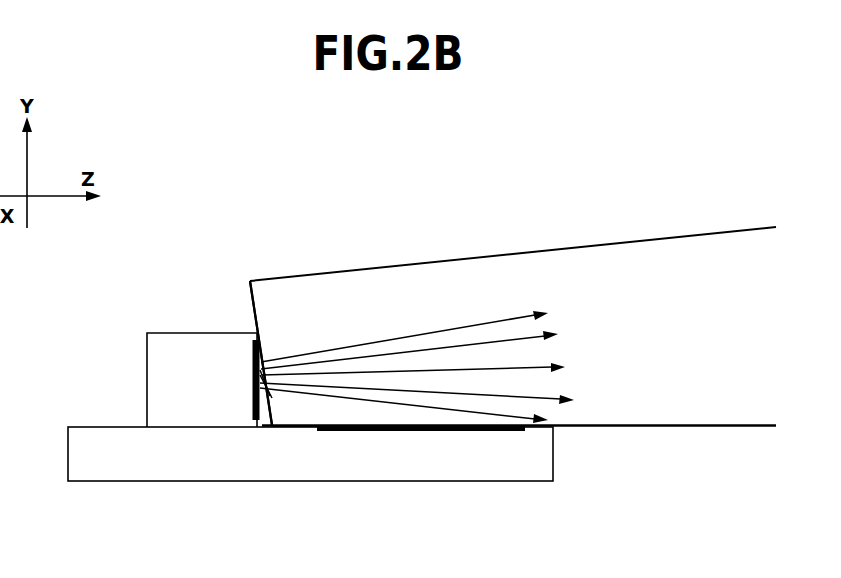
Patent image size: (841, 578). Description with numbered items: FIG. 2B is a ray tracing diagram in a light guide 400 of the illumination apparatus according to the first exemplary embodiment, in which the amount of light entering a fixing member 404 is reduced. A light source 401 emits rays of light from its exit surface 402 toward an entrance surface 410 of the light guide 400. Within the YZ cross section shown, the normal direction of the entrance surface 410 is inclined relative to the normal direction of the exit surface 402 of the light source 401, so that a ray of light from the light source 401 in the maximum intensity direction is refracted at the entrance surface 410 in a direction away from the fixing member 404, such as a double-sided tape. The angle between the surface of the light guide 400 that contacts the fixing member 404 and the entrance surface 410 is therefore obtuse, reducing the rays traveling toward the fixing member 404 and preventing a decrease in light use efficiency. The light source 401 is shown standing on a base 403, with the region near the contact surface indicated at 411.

The light guide 400 is at (470, 264).
The light source 401 is at (168, 347).
The exit surface 402 is at (254, 373).
The substrate 403 is at (176, 470).
The fixing member 404 is at (428, 432).
The entrance surface 410 is at (259, 320).
The bottom surface of light guide 411 is at (298, 397).